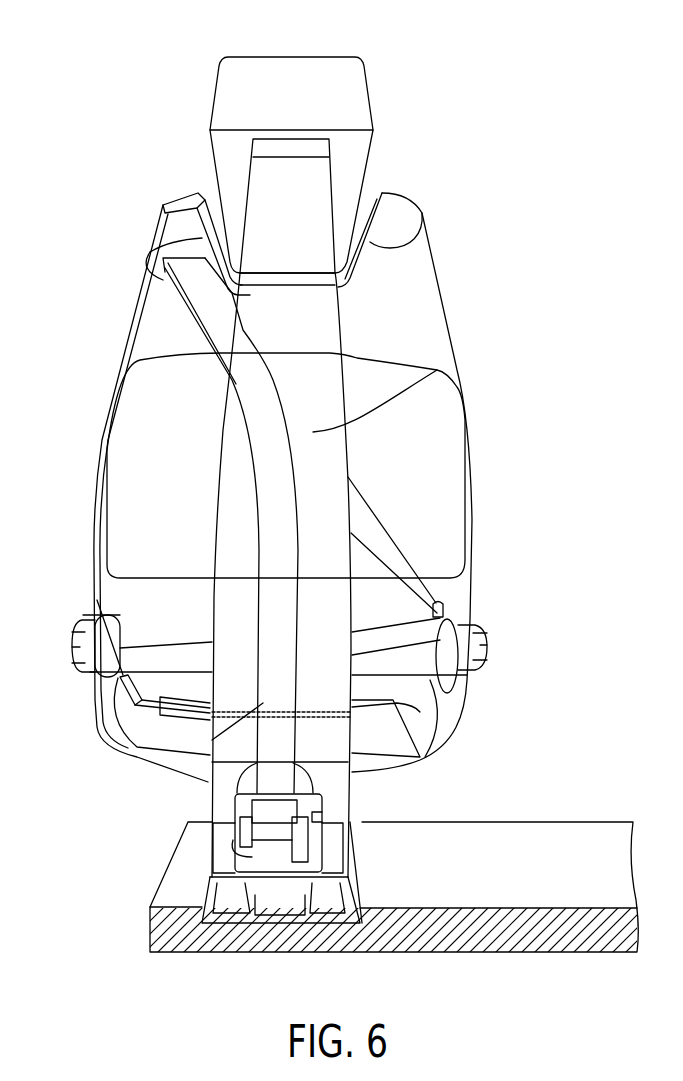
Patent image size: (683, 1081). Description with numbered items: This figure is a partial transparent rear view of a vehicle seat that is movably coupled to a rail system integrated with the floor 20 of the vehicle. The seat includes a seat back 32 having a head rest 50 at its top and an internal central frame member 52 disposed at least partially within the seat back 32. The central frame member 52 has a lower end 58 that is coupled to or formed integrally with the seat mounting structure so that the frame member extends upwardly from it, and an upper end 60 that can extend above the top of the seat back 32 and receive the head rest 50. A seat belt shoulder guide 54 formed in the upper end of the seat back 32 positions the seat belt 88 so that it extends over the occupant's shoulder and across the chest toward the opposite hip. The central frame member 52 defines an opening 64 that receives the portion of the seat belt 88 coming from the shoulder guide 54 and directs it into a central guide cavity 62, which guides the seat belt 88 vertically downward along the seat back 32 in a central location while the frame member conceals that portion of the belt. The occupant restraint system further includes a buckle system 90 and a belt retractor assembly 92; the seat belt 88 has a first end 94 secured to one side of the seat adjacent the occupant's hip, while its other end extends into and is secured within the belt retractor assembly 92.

The floor 20 is at (513, 835).
The seat back 32 is at (445, 423).
The head rest 50 is at (288, 68).
The central frame member 52 is at (214, 514).
The seat belt shoulder guide 54 is at (184, 198).
The lower end 58 is at (352, 762).
The upper end 60 is at (337, 188).
The central guide cavity 62 is at (440, 370).
The opening 64 is at (231, 387).
The seat belt 88 is at (266, 705).
The buckle system 90 is at (445, 605).
The belt retractor assembly 92 is at (257, 855).
The first end 94 is at (88, 684).